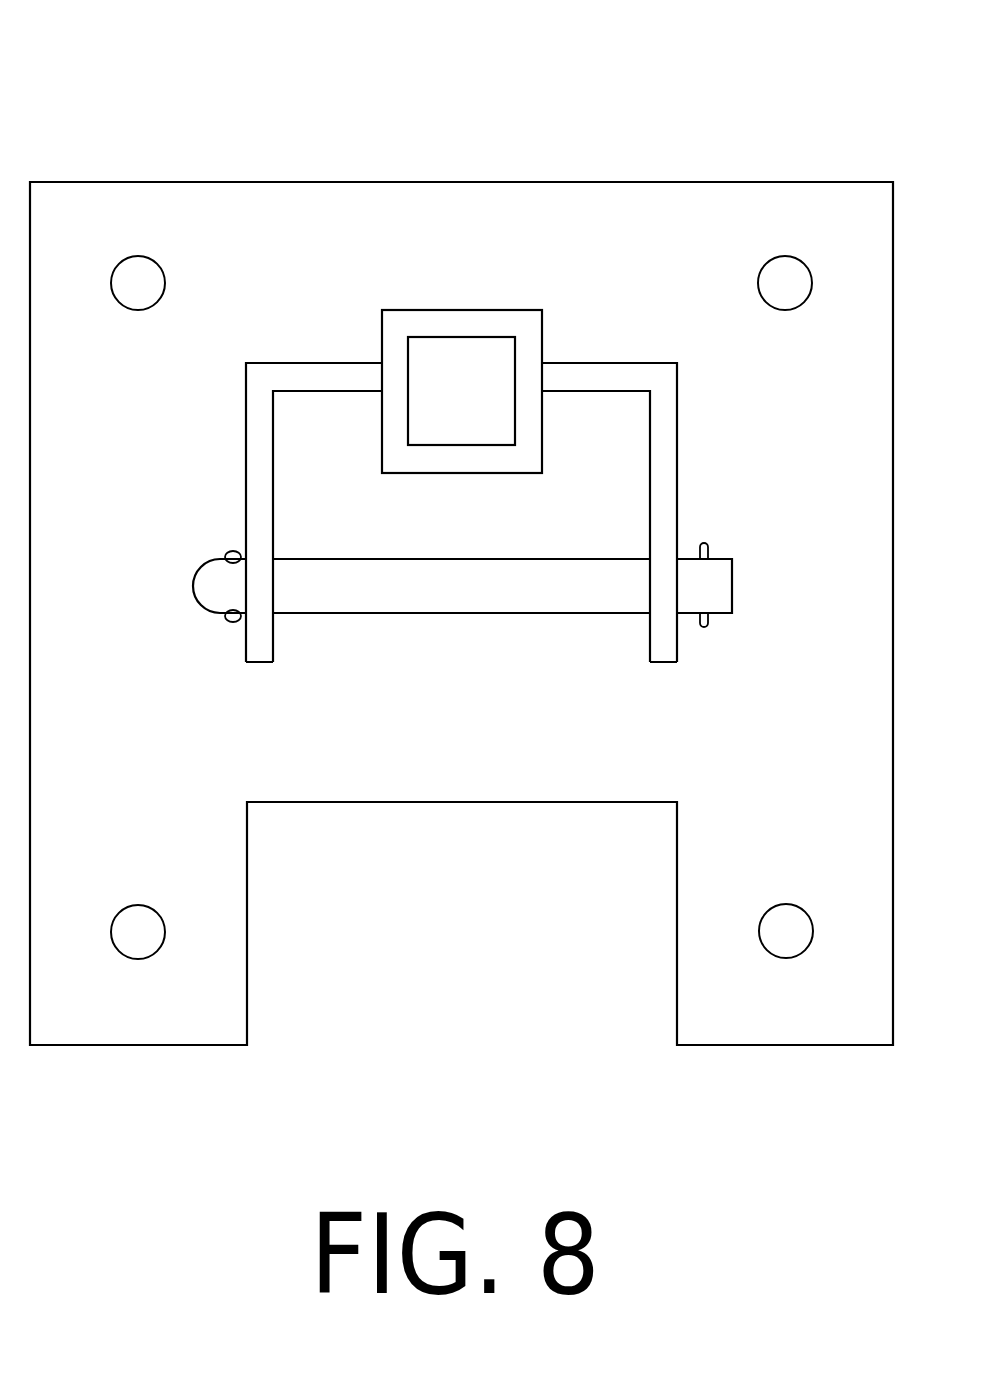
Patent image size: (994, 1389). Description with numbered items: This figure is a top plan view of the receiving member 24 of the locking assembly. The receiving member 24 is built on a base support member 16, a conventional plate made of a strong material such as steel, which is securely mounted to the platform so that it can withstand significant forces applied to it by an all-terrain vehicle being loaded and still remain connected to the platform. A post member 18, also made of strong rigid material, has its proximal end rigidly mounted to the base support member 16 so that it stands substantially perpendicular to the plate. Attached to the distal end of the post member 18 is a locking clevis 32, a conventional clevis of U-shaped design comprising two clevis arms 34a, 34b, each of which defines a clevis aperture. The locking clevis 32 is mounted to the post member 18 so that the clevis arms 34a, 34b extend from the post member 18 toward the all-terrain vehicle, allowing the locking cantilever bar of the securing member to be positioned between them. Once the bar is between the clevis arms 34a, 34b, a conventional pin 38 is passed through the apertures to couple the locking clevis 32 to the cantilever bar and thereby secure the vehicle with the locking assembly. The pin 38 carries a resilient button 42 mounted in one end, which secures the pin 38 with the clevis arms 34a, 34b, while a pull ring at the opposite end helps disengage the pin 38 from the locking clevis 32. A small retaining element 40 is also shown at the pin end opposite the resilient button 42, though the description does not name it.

The base support member 16 is at (153, 787).
The post member 18 is at (430, 407).
The receiving member 24 is at (170, 145).
The locking clevis 32 is at (445, 325).
The clevis arm 34a is at (661, 387).
The clevis arm 34b is at (257, 385).
The pin 38 is at (502, 590).
The retaining pin 40 is at (720, 575).
The resilient button 42 is at (235, 548).